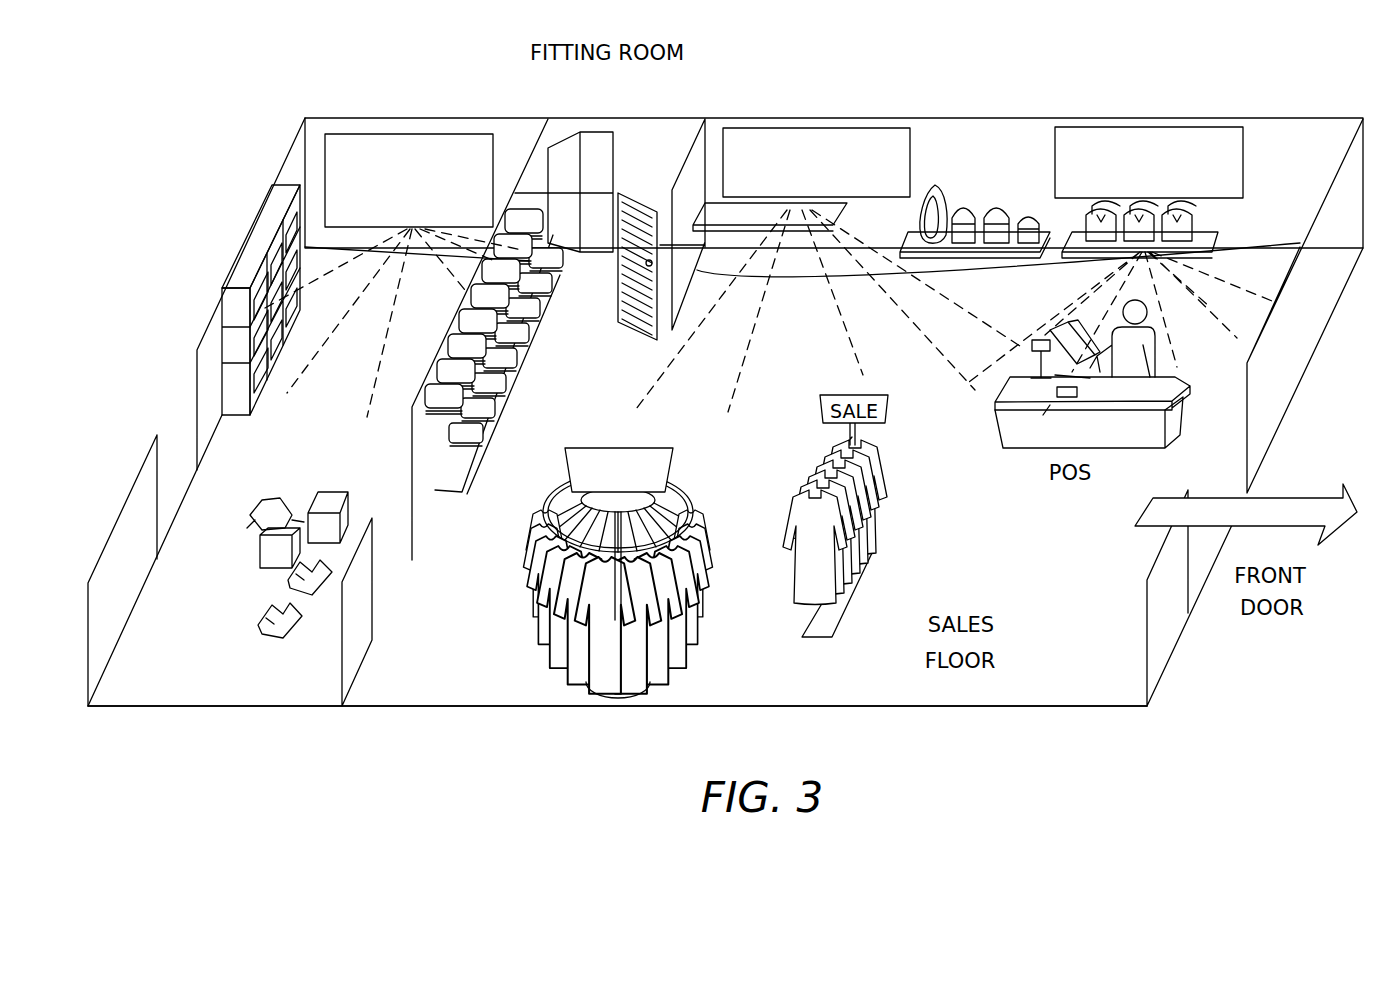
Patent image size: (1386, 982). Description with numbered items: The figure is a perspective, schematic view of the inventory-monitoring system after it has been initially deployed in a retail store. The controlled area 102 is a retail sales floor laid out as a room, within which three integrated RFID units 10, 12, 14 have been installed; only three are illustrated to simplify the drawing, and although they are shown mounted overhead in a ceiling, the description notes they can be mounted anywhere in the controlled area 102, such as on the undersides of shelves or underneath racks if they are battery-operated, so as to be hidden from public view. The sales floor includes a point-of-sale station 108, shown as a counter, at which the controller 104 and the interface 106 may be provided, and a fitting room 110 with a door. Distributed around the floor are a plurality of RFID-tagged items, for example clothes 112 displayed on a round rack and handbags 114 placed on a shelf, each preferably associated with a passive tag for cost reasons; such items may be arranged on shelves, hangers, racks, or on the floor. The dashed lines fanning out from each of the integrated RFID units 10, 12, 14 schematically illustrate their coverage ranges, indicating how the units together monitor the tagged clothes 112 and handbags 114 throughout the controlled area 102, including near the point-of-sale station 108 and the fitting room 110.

The integrated RFID unit 10 is at (797, 128).
The integrated RFID unit 12 is at (1140, 127).
The integrated RFID unit 14 is at (423, 133).
The controlled area 102 is at (893, 690).
The controller 104 is at (1050, 330).
The interface 106 is at (1077, 337).
The point-of-sale (POS) station 108 is at (1003, 433).
The fitting room 110 is at (598, 148).
The clothes 112 is at (522, 565).
The handbags 114 is at (963, 230).